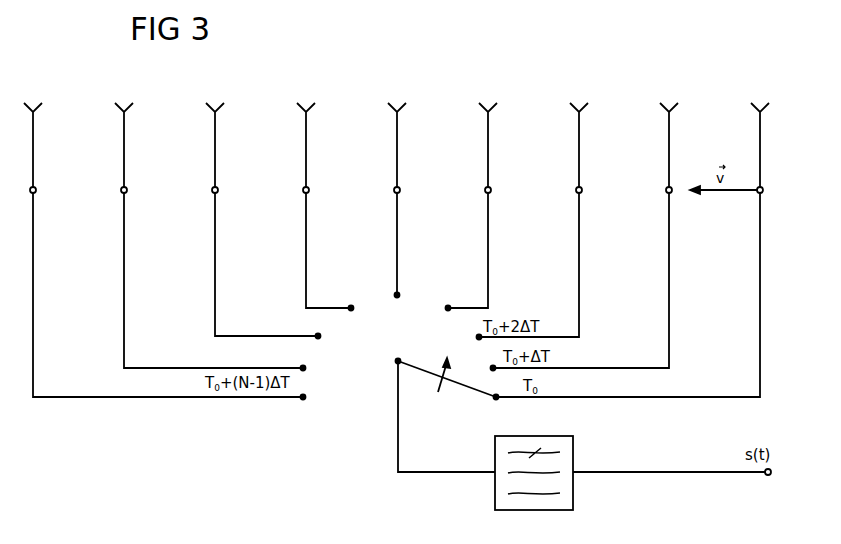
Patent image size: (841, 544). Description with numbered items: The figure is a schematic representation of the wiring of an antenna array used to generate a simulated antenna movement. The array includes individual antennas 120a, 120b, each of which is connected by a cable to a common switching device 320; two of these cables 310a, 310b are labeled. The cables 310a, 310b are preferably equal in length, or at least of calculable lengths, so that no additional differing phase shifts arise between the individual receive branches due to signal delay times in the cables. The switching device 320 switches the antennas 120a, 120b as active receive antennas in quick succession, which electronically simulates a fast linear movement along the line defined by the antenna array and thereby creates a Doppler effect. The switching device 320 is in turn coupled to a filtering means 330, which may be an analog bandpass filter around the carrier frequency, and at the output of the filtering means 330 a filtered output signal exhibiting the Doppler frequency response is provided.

The individual antenna 120a is at (760, 126).
The individual antenna 120b is at (669, 126).
The cable 310a is at (760, 292).
The cable 310b is at (669, 292).
The switching device 320 is at (413, 367).
The filtering means 330 is at (575, 462).